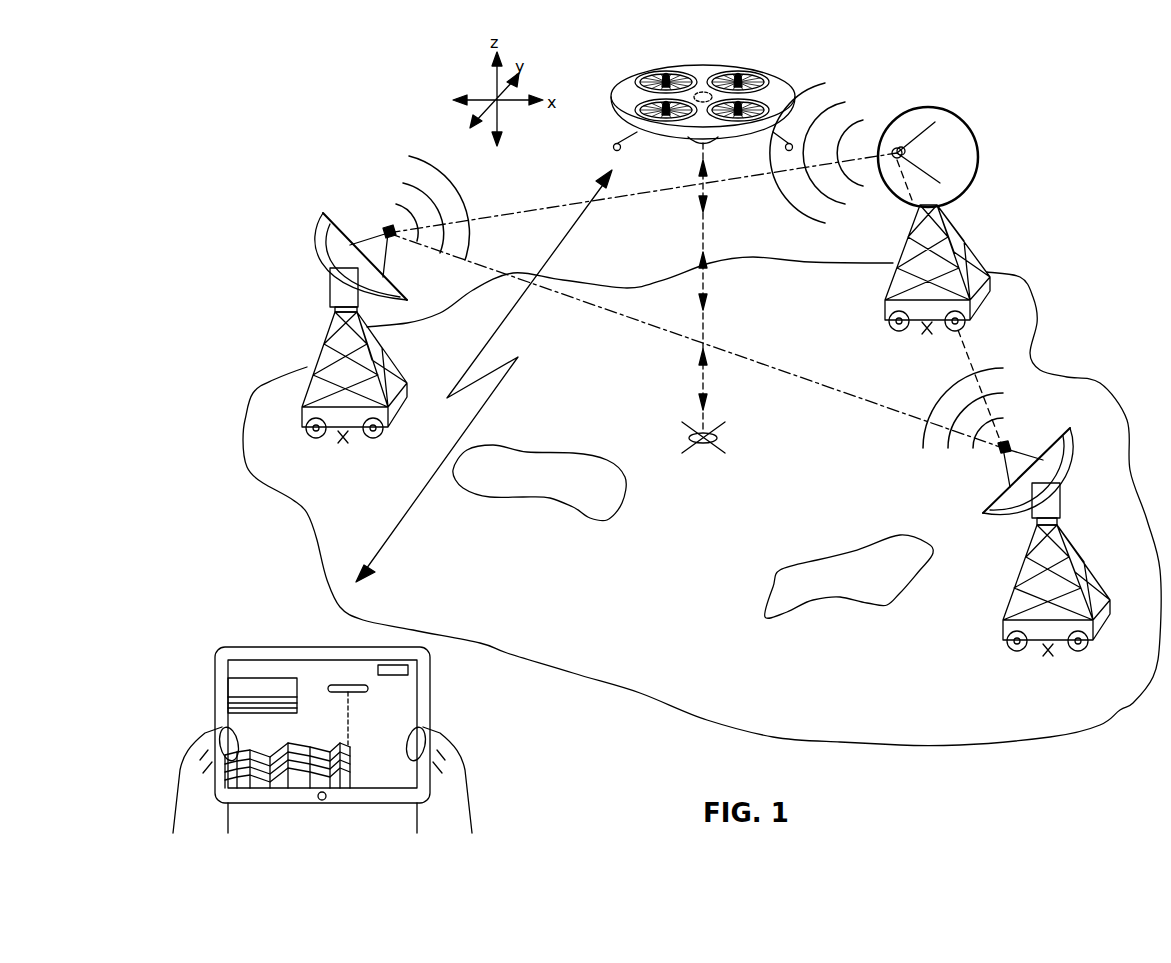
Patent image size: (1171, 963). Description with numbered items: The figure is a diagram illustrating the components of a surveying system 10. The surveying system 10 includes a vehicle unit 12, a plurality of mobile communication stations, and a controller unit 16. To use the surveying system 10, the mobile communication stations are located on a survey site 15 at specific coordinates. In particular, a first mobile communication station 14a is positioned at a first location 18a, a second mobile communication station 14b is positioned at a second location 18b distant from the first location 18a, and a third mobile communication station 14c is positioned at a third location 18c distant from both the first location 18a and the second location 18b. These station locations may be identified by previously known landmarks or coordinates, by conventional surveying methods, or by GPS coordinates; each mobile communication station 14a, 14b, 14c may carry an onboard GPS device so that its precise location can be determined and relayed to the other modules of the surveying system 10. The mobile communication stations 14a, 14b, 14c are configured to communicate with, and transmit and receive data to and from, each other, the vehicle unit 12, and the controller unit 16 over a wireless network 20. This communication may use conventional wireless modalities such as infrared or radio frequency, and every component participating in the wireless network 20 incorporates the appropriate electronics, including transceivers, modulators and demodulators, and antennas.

The surveying system 10 is at (562, 715).
The vehicle unit 12 is at (703, 65).
The first mobile communication station 14a is at (358, 320).
The second mobile communication station 14b is at (904, 229).
The third mobile communication station 14c is at (1027, 532).
The survey site 15 is at (1033, 343).
The controller unit 16 is at (240, 648).
The first location 18a is at (343, 442).
The second location 18b is at (927, 335).
The third location 18c is at (1047, 657).
The wireless network 20 is at (623, 317).